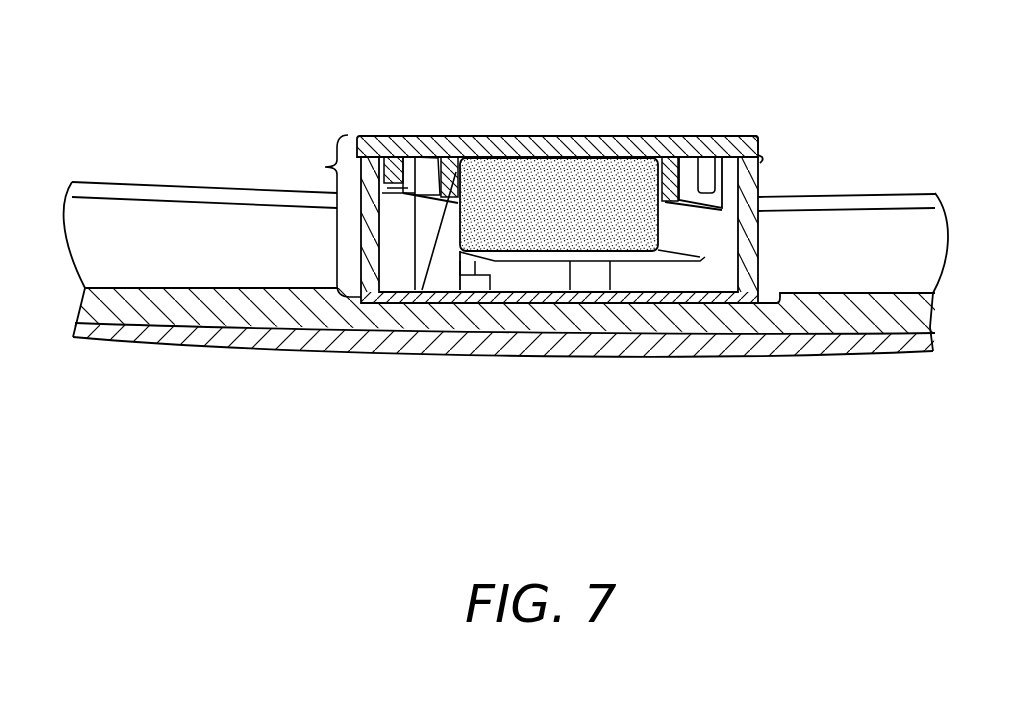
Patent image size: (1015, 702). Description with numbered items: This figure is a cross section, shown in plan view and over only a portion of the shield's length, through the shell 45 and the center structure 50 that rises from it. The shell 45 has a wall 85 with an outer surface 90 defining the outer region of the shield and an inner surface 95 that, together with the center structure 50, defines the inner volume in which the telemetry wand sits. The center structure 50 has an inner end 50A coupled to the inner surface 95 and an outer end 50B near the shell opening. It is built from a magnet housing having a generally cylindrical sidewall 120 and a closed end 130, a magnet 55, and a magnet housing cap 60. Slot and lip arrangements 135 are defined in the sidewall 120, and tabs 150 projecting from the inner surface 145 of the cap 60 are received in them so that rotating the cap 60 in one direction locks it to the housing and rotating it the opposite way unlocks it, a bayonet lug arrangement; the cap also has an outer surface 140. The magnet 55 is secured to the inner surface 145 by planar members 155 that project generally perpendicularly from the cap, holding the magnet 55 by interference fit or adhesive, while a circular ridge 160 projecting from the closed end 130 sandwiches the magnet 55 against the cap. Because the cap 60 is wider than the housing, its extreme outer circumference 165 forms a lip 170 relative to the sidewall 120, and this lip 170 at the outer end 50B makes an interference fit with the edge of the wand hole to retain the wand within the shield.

The shell 45 is at (926, 178).
The center structure 50 is at (321, 216).
The inner end 50A is at (557, 136).
The outer end 50B is at (762, 303).
The magnet 55 is at (592, 219).
The magnet housing cap 60 is at (655, 147).
The wall 85 is at (190, 317).
The outer surface 90 is at (153, 332).
The inner surface 95 is at (237, 290).
The cylindrical sidewall 120 is at (760, 238).
The closed end 130 is at (642, 295).
The slot and lip arrangement 135 is at (389, 160).
The outer surface 140 is at (702, 160).
The inner surface 145 is at (723, 160).
The tab 150 is at (408, 168).
The planar member 155 is at (423, 292).
The circular ridge 160 is at (505, 277).
The extreme outer circumference 165 is at (762, 143).
The lip 170 is at (775, 160).